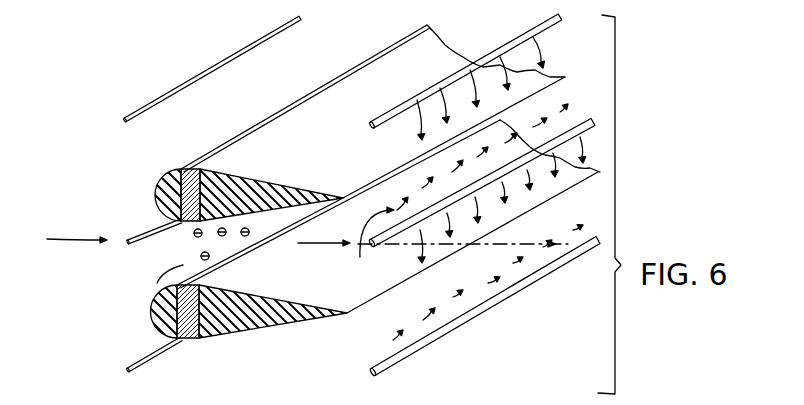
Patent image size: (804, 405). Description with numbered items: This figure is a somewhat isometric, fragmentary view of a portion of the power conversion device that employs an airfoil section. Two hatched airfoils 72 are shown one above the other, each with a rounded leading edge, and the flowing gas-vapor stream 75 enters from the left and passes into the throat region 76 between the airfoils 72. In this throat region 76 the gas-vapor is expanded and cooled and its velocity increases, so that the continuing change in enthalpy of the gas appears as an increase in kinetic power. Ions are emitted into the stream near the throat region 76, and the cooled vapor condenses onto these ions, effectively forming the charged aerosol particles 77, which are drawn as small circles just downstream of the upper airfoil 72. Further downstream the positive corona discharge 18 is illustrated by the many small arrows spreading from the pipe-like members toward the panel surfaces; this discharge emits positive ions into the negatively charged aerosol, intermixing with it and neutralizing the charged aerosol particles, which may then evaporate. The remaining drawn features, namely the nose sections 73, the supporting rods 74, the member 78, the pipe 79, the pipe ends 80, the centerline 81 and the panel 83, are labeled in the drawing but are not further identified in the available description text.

The positive corona discharge 18 is at (406, 137).
The airfoils 72 is at (210, 168).
The airfoil leading edge section 73 is at (168, 180).
The support rod 74 is at (117, 133).
The flowing gas-vapor stream 75 is at (103, 222).
The throat region 76 is at (159, 286).
The charged aerosol particles 77 is at (209, 256).
The channel 78 is at (303, 255).
The air supply pipe 79 is at (463, 314).
The nozzle pipe end 80 is at (488, 195).
The flow centerline 81 is at (483, 240).
The panel 83 is at (328, 152).